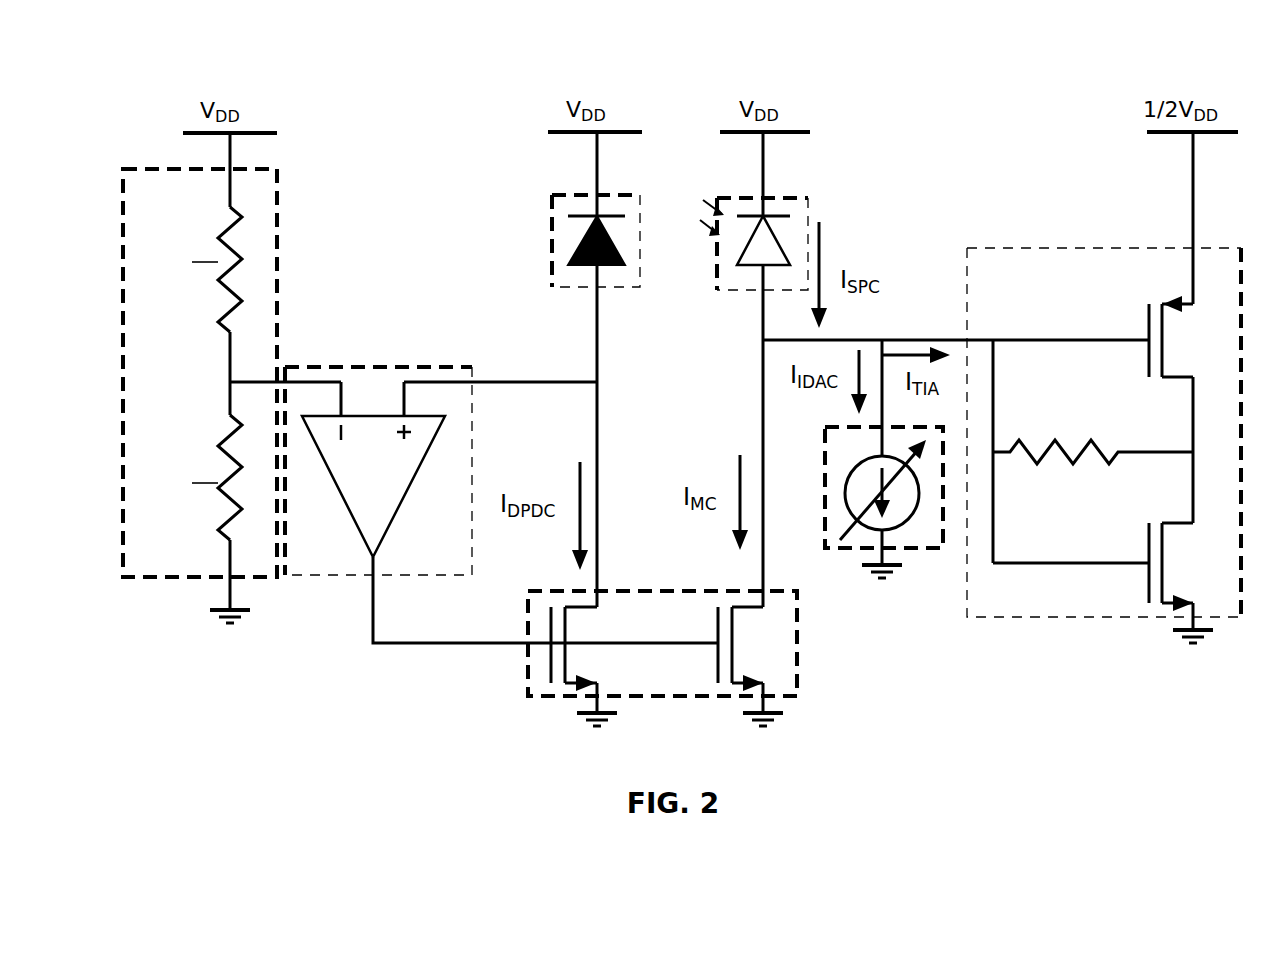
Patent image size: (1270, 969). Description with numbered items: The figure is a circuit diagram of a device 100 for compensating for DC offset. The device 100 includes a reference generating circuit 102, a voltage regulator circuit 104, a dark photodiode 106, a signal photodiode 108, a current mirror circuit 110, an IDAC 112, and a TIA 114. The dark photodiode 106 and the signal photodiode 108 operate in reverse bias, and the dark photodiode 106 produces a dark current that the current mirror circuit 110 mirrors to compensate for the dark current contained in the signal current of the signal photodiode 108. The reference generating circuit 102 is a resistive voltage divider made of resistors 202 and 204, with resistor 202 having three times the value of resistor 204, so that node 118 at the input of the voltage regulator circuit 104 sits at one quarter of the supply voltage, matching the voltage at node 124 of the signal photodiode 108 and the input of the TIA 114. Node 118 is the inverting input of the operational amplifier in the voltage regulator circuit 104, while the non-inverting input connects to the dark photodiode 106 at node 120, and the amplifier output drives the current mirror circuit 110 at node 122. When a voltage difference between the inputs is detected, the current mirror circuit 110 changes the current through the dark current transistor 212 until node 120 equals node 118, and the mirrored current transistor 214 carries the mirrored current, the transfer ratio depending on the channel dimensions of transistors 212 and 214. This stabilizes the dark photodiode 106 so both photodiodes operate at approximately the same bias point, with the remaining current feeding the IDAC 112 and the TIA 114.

The device for compensating for DC offset 100 is at (877, 82).
The reference generating circuit 102 is at (277, 236).
The voltage regulator circuit 104 is at (386, 364).
The dark photodiode 106 is at (543, 220).
The signal photodiode 108 is at (808, 201).
The current mirror circuit 110 is at (797, 620).
The IDAC 112 is at (924, 548).
The TIA 114 is at (1048, 247).
The node at input of voltage regulator 118 is at (310, 380).
The dark photodiode node 120 is at (542, 381).
The operational amplifier output node 122 is at (395, 648).
The signal photodiode node 124 is at (760, 380).
The resistor 202 is at (248, 283).
The resistor 204 is at (240, 508).
The dark current transistor 212 is at (541, 662).
The mirrored current transistor 214 is at (740, 662).